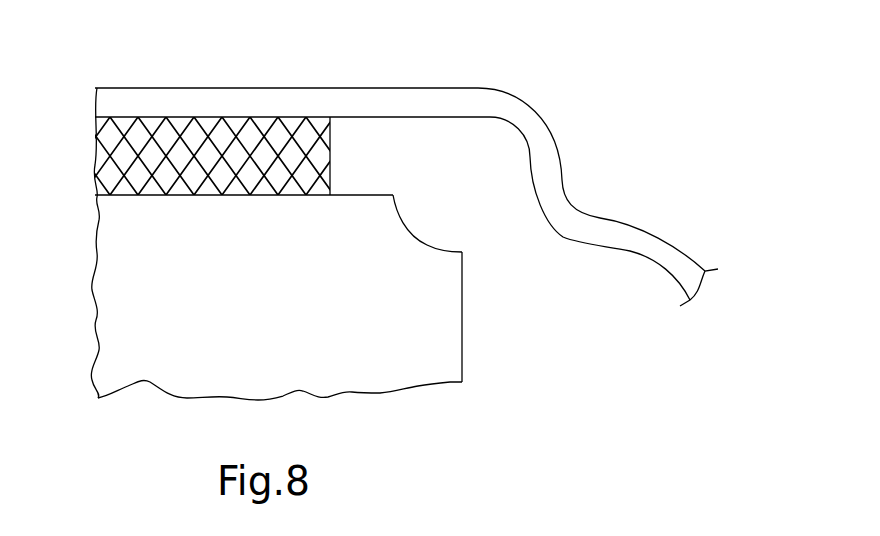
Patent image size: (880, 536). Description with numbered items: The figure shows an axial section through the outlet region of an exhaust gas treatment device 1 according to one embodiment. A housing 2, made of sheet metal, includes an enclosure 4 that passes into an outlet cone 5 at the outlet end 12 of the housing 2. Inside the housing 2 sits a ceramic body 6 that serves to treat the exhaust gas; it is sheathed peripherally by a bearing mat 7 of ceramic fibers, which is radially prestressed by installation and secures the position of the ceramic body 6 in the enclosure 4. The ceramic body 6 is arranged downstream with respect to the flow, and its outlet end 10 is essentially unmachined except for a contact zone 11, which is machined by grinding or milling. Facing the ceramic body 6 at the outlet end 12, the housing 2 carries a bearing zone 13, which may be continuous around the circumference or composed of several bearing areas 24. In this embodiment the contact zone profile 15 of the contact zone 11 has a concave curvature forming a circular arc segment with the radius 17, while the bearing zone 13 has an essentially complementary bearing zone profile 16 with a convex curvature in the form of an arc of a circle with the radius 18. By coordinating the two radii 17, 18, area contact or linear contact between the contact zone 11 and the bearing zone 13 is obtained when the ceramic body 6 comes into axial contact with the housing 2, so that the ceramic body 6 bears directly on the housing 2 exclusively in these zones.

The exhaust gas treatment device 1 is at (640, 90).
The housing 2 is at (141, 80).
The enclosure 4 is at (258, 97).
The outlet cone 5 is at (663, 245).
The ceramic body 6 is at (141, 390).
The bearing mat 7 is at (150, 192).
The outlet end 10 is at (463, 351).
The contact zone 11 is at (443, 240).
The outlet end 12 is at (671, 279).
The bearing zone 13 is at (546, 236).
The contact zone profile 15 is at (406, 211).
The bearing zone profile 16 is at (533, 212).
The radius 17 is at (421, 229).
The radius 18 is at (566, 222).
The bearing area 24 is at (515, 141).